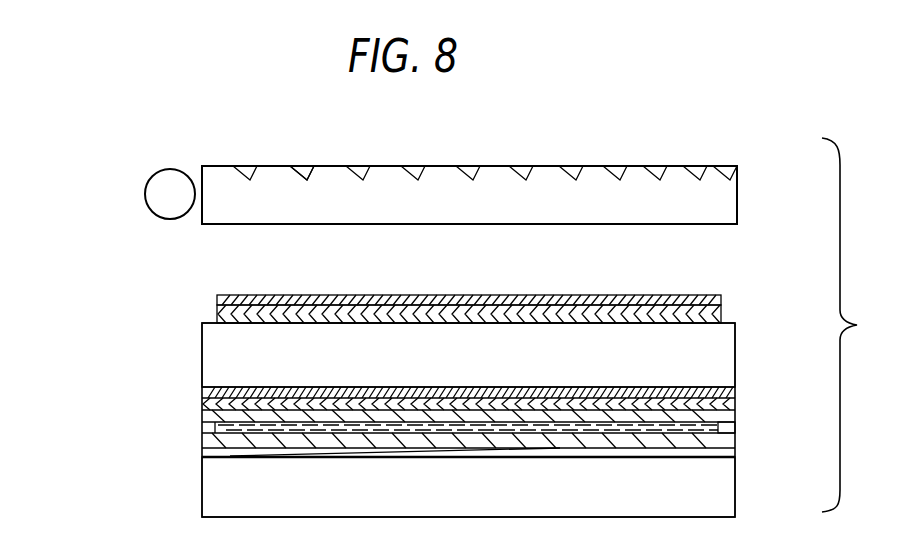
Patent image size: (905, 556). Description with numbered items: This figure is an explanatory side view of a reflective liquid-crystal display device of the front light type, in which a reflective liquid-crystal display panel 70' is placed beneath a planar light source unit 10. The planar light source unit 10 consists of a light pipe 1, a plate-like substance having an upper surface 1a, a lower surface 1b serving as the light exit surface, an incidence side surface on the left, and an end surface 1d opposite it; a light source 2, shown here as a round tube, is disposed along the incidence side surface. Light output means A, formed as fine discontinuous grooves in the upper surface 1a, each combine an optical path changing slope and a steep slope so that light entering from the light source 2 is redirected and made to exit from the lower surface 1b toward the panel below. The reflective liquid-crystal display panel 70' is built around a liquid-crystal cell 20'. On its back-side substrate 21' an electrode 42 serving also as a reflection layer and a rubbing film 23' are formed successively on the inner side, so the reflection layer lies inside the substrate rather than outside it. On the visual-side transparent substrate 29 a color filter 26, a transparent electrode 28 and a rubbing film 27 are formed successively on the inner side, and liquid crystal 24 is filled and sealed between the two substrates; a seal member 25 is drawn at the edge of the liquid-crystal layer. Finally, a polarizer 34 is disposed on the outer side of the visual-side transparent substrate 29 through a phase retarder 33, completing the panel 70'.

The planar light source unit 10 is at (139, 154).
The light pipe 1 is at (590, 180).
The upper surface 1a is at (672, 167).
The lower surface 1b is at (201, 165).
The end surface 1d is at (737, 193).
The light source 2 is at (162, 197).
The light output means A is at (305, 166).
The reflective liquid-crystal display panel 70' is at (399, 395).
The polarizer 34 is at (216, 298).
The phase retarder 33 is at (216, 316).
The visual-side transparent substrate 29 is at (201, 350).
The transparent electrode 28 is at (201, 390).
The color filter 26 is at (735, 390).
The rubbing film 27 is at (201, 402).
The liquid crystal 24 is at (201, 415).
The rubbing film 23' is at (445, 431).
The sealing member 25 is at (727, 430).
The electrode serving as a reflection layer 42 is at (201, 445).
The back-side substrate 21' is at (431, 487).
The liquid-crystal cell 20' is at (409, 420).